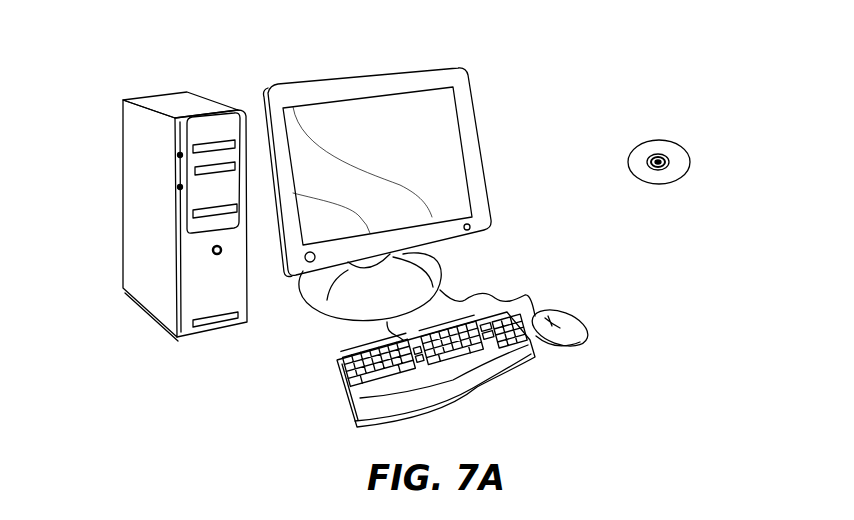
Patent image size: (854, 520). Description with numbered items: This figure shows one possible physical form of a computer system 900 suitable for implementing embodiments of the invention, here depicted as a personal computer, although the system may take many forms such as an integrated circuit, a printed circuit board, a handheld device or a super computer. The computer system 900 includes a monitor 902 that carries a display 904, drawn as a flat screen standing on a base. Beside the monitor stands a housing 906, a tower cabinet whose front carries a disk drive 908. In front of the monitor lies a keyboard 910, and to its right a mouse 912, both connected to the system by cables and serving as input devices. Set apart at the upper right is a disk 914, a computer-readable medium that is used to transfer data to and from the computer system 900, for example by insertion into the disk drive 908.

The computer system 900 is at (588, 60).
The monitor 902 is at (477, 173).
The display 904 is at (440, 110).
The housing 906 is at (173, 102).
The disk drive 908 is at (228, 212).
The keyboard 910 is at (355, 398).
The mouse 912 is at (578, 320).
The disk 914 is at (677, 140).